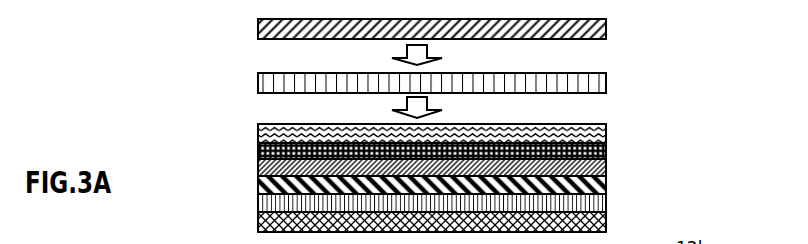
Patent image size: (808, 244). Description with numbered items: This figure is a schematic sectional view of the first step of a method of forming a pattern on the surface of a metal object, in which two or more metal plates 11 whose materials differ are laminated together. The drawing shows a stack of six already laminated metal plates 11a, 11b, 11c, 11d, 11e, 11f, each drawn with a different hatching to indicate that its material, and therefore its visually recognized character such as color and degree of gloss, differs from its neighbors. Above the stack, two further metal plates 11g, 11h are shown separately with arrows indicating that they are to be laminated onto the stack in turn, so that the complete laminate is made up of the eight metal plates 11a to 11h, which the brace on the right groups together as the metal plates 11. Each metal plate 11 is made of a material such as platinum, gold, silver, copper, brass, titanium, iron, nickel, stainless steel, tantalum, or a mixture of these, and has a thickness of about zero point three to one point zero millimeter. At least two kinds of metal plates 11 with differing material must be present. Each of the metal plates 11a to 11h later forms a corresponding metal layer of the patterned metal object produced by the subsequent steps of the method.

The metal plate 11 is at (524, 125).
The metal plate 11a is at (483, 224).
The metal plate 11b is at (606, 202).
The metal plate 11c is at (606, 183).
The metal plate 11d is at (606, 164).
The metal plate 11e is at (606, 146).
The metal plate 11f is at (606, 127).
The metal plate 11g is at (606, 78).
The metal plate 11h is at (606, 24).